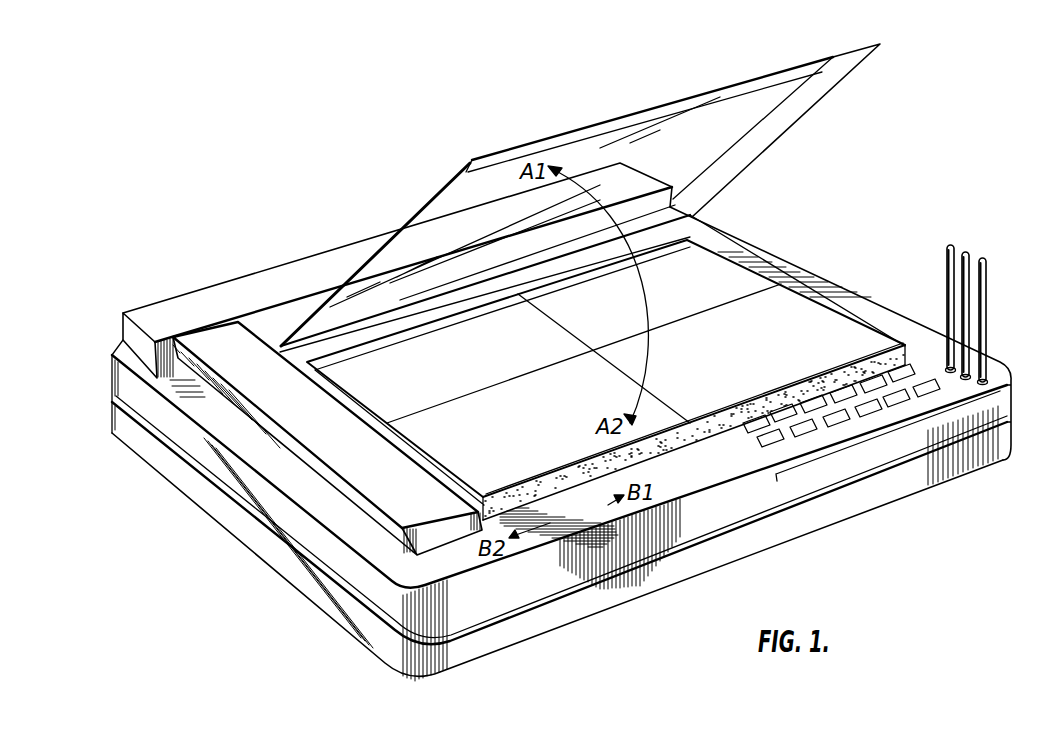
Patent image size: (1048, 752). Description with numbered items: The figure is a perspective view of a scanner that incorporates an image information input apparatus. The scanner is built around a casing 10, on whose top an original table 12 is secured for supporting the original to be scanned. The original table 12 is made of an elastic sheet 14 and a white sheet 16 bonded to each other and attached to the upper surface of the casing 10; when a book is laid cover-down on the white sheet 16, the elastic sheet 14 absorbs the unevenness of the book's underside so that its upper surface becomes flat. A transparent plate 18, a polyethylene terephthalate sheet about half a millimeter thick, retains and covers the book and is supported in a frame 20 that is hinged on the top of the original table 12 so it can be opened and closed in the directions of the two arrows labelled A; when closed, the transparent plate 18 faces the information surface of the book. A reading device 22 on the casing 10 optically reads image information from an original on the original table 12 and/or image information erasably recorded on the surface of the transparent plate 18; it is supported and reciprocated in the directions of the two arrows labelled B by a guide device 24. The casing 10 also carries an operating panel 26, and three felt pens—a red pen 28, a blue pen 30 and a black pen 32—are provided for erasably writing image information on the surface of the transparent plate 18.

The casing 10 is at (548, 620).
The original table 12 is at (712, 427).
The elastic sheet 14 is at (650, 453).
The white sheet 16 is at (670, 417).
The transparent plate 18 is at (427, 205).
The frame 20 is at (592, 127).
The reading device 22 is at (198, 343).
The guide device 24 is at (274, 283).
The operating panel 26 is at (895, 415).
The red pen 28 is at (947, 257).
The blue pen 30 is at (964, 255).
The black pen 32 is at (987, 295).